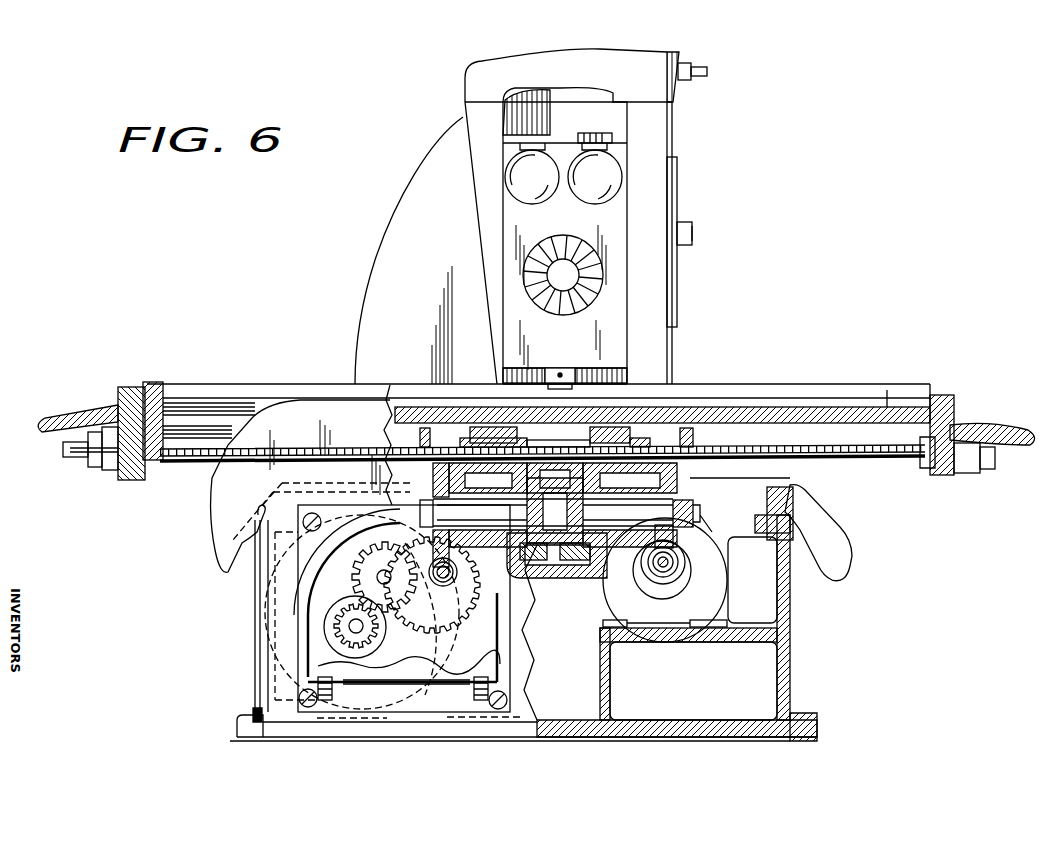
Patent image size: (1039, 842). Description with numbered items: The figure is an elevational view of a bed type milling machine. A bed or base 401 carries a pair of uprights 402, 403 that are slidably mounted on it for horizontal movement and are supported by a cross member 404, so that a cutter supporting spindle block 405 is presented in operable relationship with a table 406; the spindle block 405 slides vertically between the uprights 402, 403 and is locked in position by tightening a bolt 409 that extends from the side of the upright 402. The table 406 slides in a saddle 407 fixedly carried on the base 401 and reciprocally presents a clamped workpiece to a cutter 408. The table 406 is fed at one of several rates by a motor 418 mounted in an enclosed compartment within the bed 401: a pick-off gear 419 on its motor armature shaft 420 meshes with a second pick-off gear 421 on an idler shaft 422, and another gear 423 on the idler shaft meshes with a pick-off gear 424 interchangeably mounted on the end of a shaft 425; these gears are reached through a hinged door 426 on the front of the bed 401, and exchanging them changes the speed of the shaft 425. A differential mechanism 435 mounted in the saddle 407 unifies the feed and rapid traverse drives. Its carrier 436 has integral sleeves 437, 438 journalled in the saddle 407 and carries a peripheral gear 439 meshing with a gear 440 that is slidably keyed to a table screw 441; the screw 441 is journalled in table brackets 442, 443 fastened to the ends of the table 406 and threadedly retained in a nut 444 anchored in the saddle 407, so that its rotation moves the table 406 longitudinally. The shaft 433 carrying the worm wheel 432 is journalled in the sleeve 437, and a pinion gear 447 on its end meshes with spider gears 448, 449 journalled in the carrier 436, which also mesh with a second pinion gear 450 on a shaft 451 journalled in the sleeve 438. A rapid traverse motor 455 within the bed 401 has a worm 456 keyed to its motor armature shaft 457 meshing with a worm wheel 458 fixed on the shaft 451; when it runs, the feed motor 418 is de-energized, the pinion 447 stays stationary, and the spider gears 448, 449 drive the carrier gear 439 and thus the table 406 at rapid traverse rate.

The bed or base 401 is at (790, 618).
The upright 402 is at (652, 347).
The upright 403 is at (430, 158).
The cross member 404 is at (482, 78).
The spindle block 405 is at (610, 147).
The table 406 is at (842, 396).
The saddle 407 is at (777, 497).
The cutter 408 is at (577, 222).
The bolt 409 is at (692, 232).
The motor 418 is at (256, 660).
The pick-off gear 419 is at (377, 633).
The motor armature shaft 420 is at (360, 628).
The second pick-off gear 421 is at (385, 527).
The idler shaft 422 is at (386, 568).
The gear 423 is at (380, 622).
The pick-off gear 424 is at (445, 611).
The shaft 425 is at (443, 583).
The hinged door 426 is at (467, 662).
The worm wheel 432 is at (408, 480).
The shaft 433 is at (458, 558).
The differential mechanism 435 is at (562, 583).
The carrier 436 is at (566, 564).
The sleeve 437 is at (456, 571).
The sleeve 438 is at (648, 560).
The gear 439 is at (580, 477).
The gear 440 is at (585, 435).
The table screw 441 is at (850, 452).
The table bracket 442 is at (130, 482).
The table bracket 443 is at (942, 478).
The nut 444 is at (473, 435).
The pinion gear 447 is at (555, 510).
The spider gear 448 is at (617, 492).
The spider gear 449 is at (547, 562).
The second pinion gear 450 is at (640, 509).
The shaft 451 is at (690, 513).
The rapid traverse motor 455 is at (715, 570).
The worm 456 is at (653, 572).
The motor armature shaft 457 is at (663, 573).
The worm wheel 458 is at (674, 545).